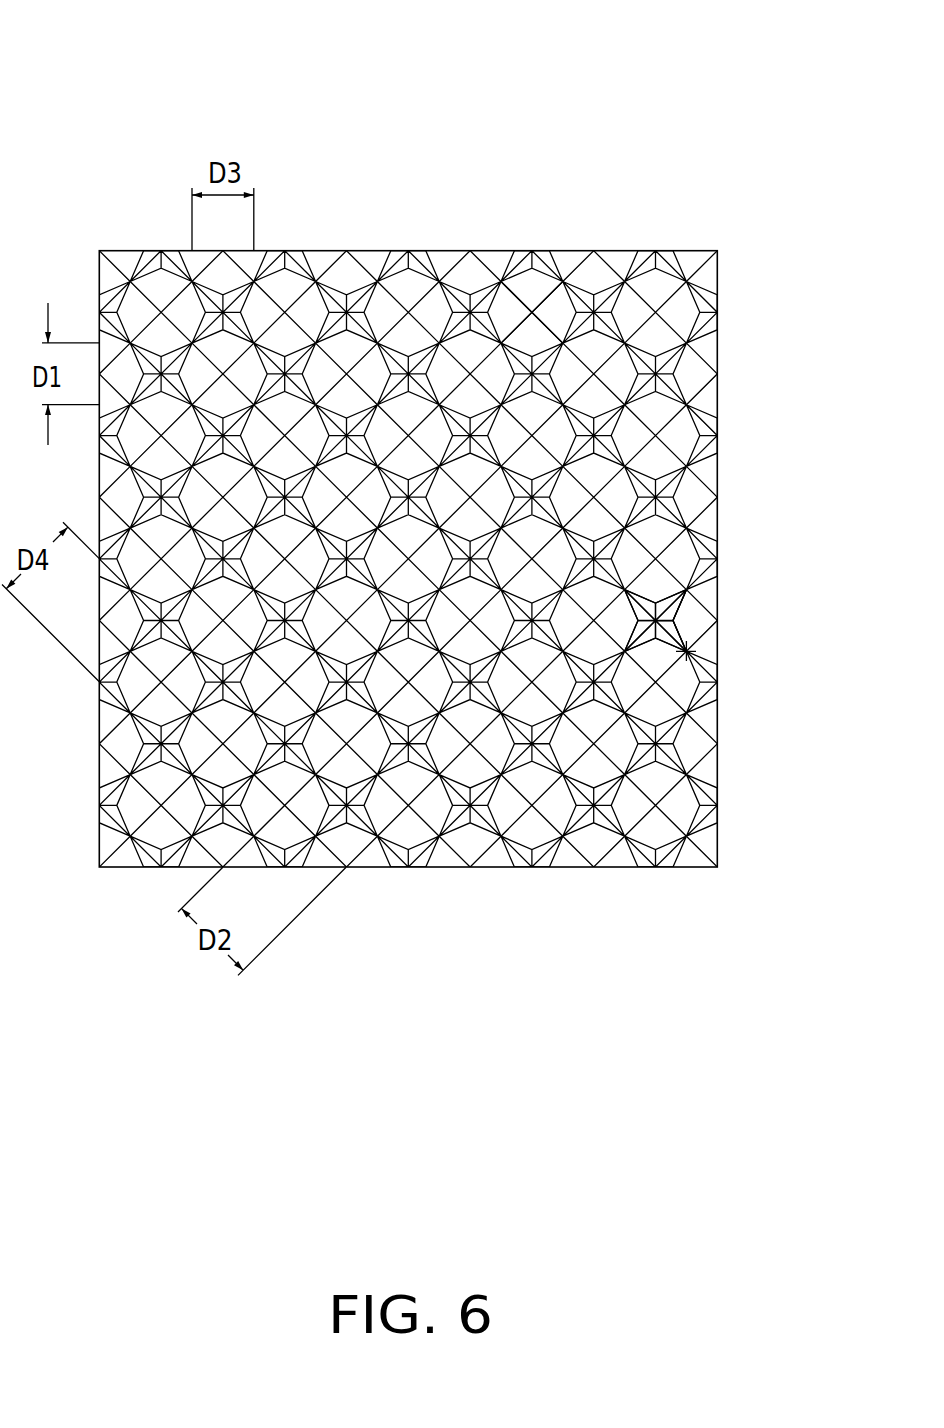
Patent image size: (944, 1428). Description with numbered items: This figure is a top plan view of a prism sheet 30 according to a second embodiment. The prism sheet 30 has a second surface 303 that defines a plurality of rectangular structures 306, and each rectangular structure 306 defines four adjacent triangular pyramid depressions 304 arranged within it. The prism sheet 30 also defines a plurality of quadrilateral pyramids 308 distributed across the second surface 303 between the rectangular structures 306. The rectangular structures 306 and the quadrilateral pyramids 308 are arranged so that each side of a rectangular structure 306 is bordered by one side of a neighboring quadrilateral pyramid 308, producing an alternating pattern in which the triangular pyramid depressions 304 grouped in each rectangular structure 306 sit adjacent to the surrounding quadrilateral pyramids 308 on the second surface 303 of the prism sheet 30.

The prism sheet 30 is at (188, 75).
The quadrilateral pyramid 308 is at (535, 293).
The rectangular structure 306 is at (660, 615).
The triangular pyramid depression 304 is at (680, 623).
The second surface 303 is at (692, 653).